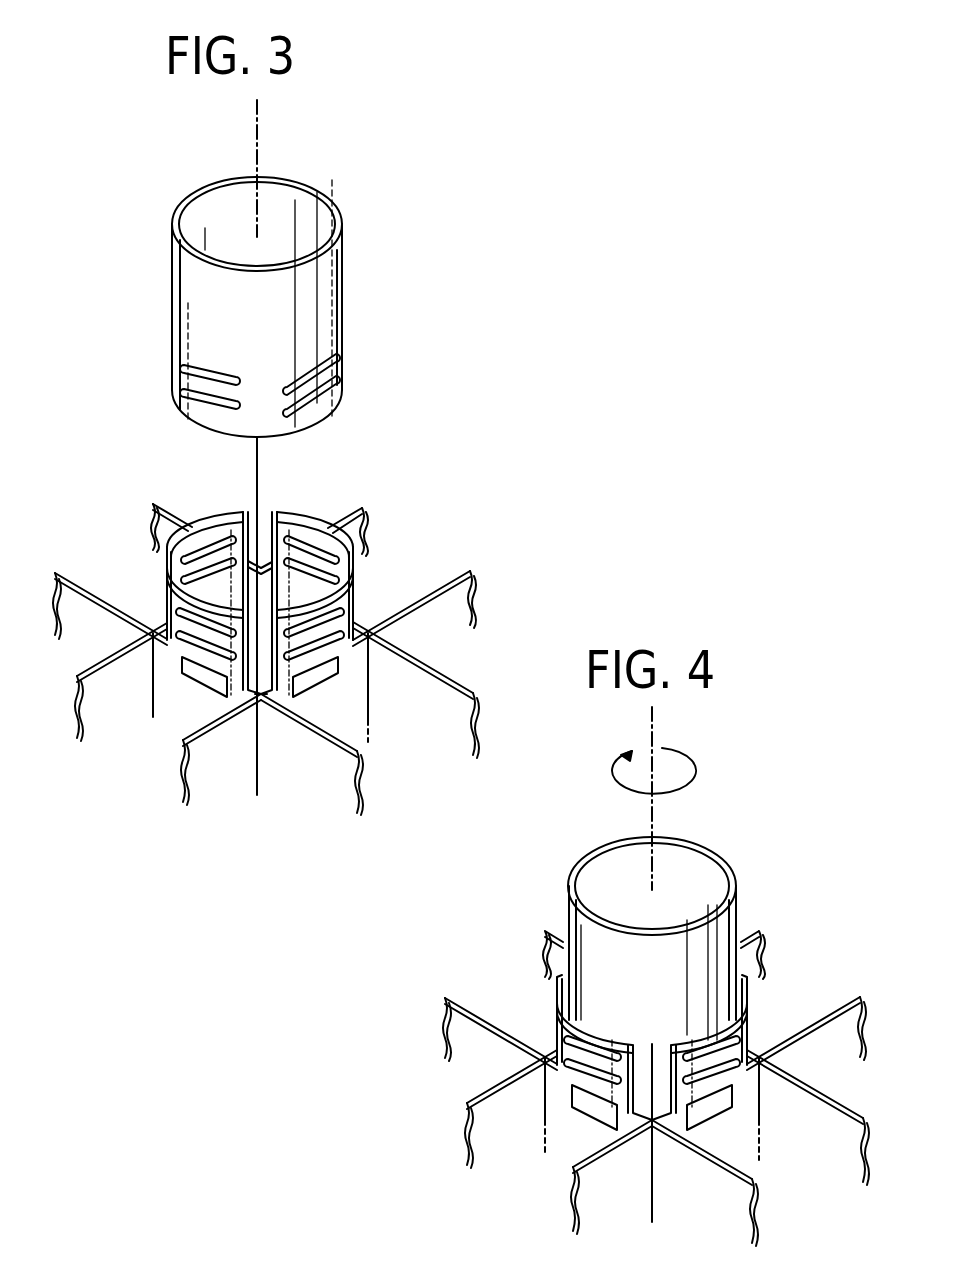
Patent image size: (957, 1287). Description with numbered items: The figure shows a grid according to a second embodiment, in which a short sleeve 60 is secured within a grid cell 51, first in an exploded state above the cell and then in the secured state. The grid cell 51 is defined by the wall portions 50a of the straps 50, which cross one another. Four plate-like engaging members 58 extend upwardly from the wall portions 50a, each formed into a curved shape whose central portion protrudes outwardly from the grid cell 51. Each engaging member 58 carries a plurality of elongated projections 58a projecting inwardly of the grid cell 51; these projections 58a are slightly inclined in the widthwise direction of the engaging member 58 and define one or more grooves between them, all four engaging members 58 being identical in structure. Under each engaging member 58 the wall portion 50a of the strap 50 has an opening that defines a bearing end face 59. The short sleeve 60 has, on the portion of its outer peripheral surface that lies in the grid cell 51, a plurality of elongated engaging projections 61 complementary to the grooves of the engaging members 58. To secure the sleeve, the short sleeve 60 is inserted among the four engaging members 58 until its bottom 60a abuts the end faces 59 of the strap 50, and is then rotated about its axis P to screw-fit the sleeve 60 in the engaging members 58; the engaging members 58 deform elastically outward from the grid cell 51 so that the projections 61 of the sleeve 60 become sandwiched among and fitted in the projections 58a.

In FIG. 3, the axis P is at (260, 152).
In FIG. 4, the axis P is at (657, 736).
In FIG. 3, the strap 50 is at (168, 690).
In FIG. 4, the strap 50 is at (570, 1137).
In FIG. 3, the wall portion 50a is at (160, 658).
In FIG. 4, the wall portion 50a is at (553, 1085).
In FIG. 3, the grid cell 51 is at (265, 680).
In FIG. 3, the engaging member 58 is at (153, 550).
In FIG. 4, the engaging member 58 is at (555, 1010).
In FIG. 3, the projection 58a is at (253, 518).
In FIG. 4, the projection 58a is at (570, 1042).
In FIG. 3, the bearing end face 59 is at (190, 678).
In FIG. 4, the bearing end face 59 is at (585, 1103).
In FIG. 3, the short sleeve 60 is at (352, 268).
In FIG. 4, the short sleeve 60 is at (735, 856).
In FIG. 3, the bottom 60a is at (322, 418).
In FIG. 3, the engaging projection 61 is at (338, 362).